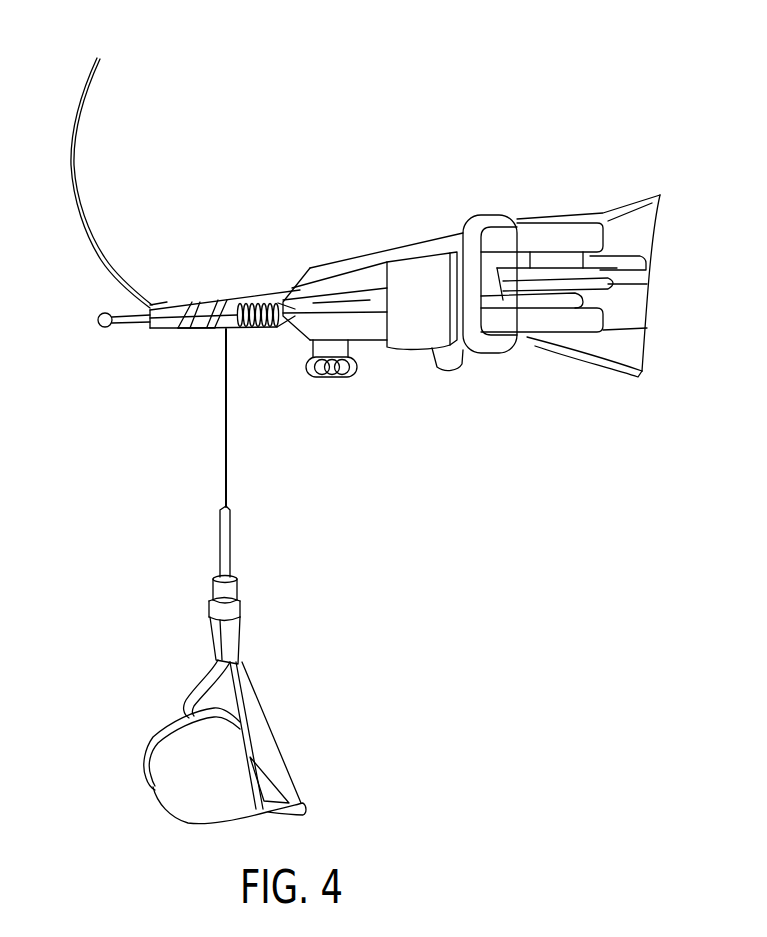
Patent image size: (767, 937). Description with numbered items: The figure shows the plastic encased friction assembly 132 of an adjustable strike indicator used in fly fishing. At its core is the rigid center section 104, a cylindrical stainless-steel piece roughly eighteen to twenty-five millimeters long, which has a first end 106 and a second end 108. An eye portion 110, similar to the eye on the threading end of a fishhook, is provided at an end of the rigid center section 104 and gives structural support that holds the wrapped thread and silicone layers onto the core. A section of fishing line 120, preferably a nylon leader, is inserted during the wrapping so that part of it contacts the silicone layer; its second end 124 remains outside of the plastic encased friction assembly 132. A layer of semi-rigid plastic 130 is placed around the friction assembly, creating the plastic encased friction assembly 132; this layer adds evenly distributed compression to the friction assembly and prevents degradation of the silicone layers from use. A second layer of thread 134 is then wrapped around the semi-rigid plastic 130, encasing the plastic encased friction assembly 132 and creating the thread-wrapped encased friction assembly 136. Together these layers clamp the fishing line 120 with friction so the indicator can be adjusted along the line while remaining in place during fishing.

The rigid center section 104 is at (140, 335).
The first end 106 is at (113, 335).
The second end 108 is at (287, 283).
The eye portion 110 is at (90, 302).
The section of fishing line 120 is at (107, 237).
The second end of the section of fishing line 124 is at (665, 195).
The layer of semi-rigid plastic 130 is at (242, 290).
The plastic encased friction assembly 132 is at (205, 290).
The second layer of thread 134 is at (222, 335).
The thread-wrapped encased friction assembly 136 is at (190, 335).